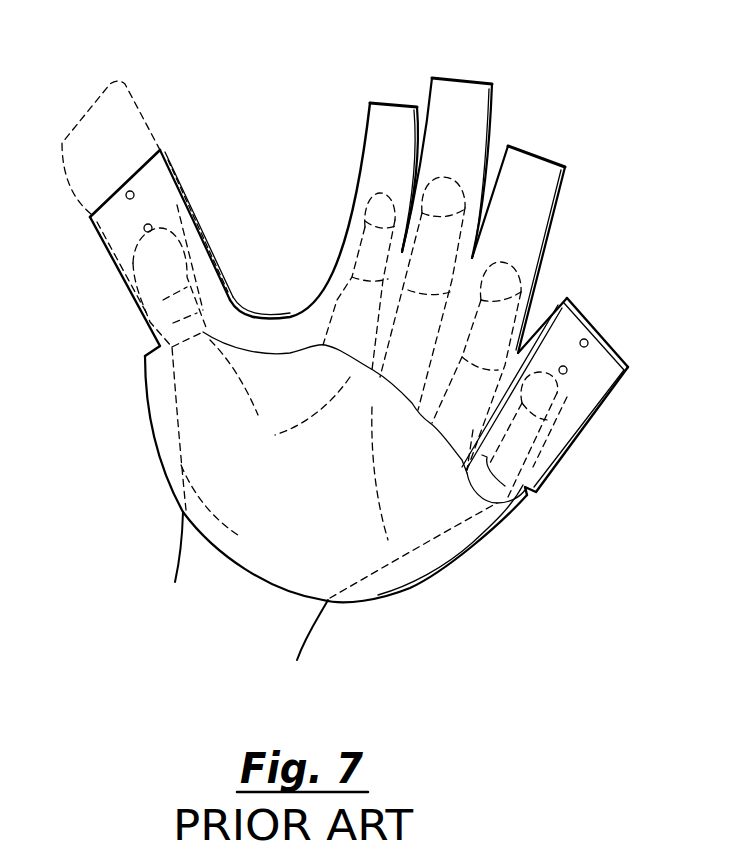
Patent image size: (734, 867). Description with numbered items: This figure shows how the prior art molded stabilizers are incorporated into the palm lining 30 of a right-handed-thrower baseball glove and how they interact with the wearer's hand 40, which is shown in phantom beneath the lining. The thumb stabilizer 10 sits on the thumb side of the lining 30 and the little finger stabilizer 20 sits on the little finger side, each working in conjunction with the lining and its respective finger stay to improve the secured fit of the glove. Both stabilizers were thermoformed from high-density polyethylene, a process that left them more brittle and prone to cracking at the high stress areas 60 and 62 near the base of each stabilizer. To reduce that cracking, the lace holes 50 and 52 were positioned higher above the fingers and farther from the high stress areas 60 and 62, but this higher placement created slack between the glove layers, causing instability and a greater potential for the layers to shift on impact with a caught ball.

The thumb stabilizer 10 is at (156, 186).
The little finger stabilizer 20 is at (596, 383).
The lining 30 is at (480, 86).
The hand 40 is at (263, 592).
The lace hole 50 is at (148, 232).
The lace hole 52 is at (583, 340).
The high stress area 60 is at (197, 226).
The high stress area 62 is at (568, 325).